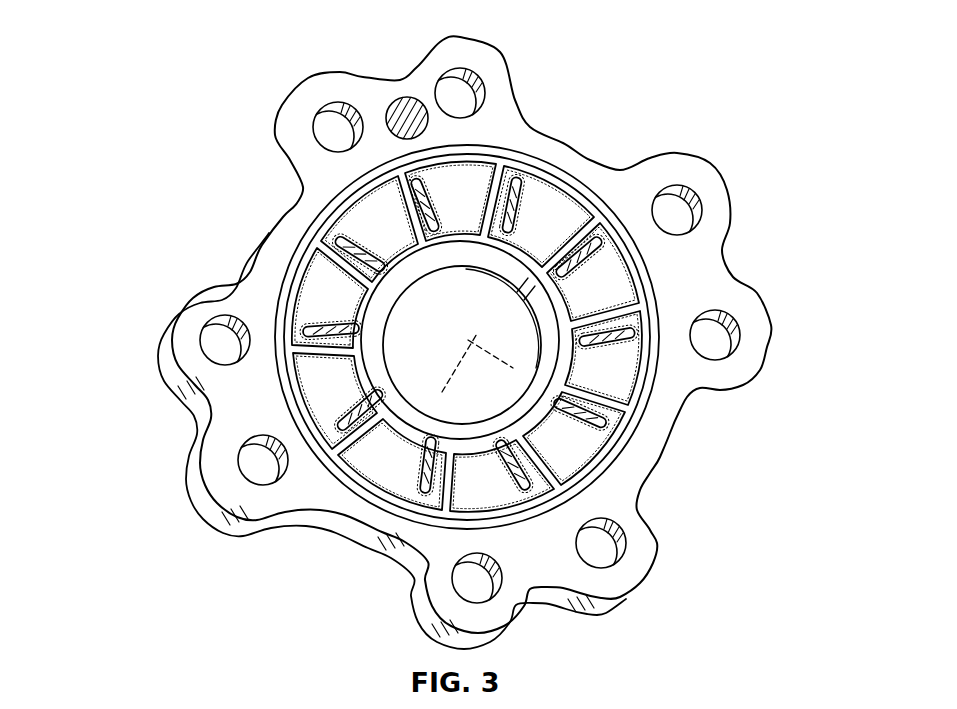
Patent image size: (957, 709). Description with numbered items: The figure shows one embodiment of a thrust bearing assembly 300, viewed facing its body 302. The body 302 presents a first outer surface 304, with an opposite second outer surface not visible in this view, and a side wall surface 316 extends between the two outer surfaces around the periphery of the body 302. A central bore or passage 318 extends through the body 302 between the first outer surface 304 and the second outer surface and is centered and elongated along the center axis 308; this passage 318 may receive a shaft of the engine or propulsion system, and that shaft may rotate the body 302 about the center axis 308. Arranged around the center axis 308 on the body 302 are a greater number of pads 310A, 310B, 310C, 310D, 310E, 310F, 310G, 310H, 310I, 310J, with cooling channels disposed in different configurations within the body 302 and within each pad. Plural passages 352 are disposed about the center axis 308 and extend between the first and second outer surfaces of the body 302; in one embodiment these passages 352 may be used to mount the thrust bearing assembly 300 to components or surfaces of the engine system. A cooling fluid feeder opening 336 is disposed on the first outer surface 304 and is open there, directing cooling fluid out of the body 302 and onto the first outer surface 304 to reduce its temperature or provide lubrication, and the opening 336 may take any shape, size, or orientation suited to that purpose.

The thrust bearing assembly 300 is at (655, 84).
The body 302 is at (300, 113).
The first outer surface 304 is at (507, 110).
The center axis 308 is at (468, 341).
The pad 310A is at (627, 373).
The pad 310B is at (612, 267).
The pad 310C is at (560, 203).
The pad 310D is at (435, 178).
The pad 310E is at (370, 223).
The pad 310F is at (318, 295).
The pad 310G is at (345, 382).
The pad 310H is at (388, 463).
The pad 310I is at (500, 493).
The pad 310J is at (590, 445).
The side wall surface 316 is at (162, 360).
The bore or passage 318 is at (422, 365).
The cooling fluid feeder opening 336 is at (387, 104).
The passages 352 is at (677, 220).